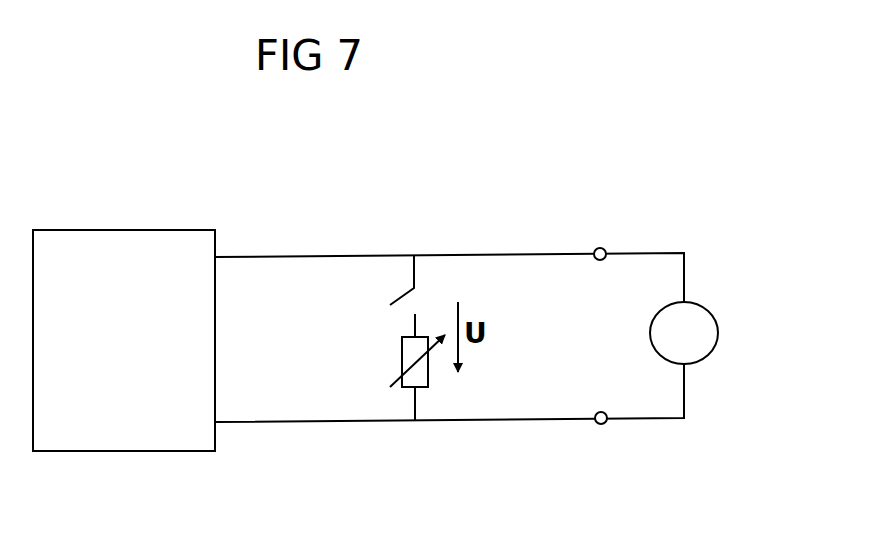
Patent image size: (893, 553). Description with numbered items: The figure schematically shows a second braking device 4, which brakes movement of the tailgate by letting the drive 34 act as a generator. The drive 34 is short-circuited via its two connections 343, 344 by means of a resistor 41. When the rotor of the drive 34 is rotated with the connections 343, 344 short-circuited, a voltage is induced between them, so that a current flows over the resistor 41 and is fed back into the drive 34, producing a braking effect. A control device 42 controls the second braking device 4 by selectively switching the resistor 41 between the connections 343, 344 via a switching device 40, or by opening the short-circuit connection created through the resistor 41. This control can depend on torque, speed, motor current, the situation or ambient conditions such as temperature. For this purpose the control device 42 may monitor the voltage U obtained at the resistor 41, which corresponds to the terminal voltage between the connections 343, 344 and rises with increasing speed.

The control device 42 is at (103, 431).
The switching device 40 is at (405, 292).
The resistor 41 is at (412, 376).
The second braking device 4 is at (322, 397).
The connection 343 is at (605, 247).
The connection 344 is at (603, 424).
The drive 34 is at (705, 305).